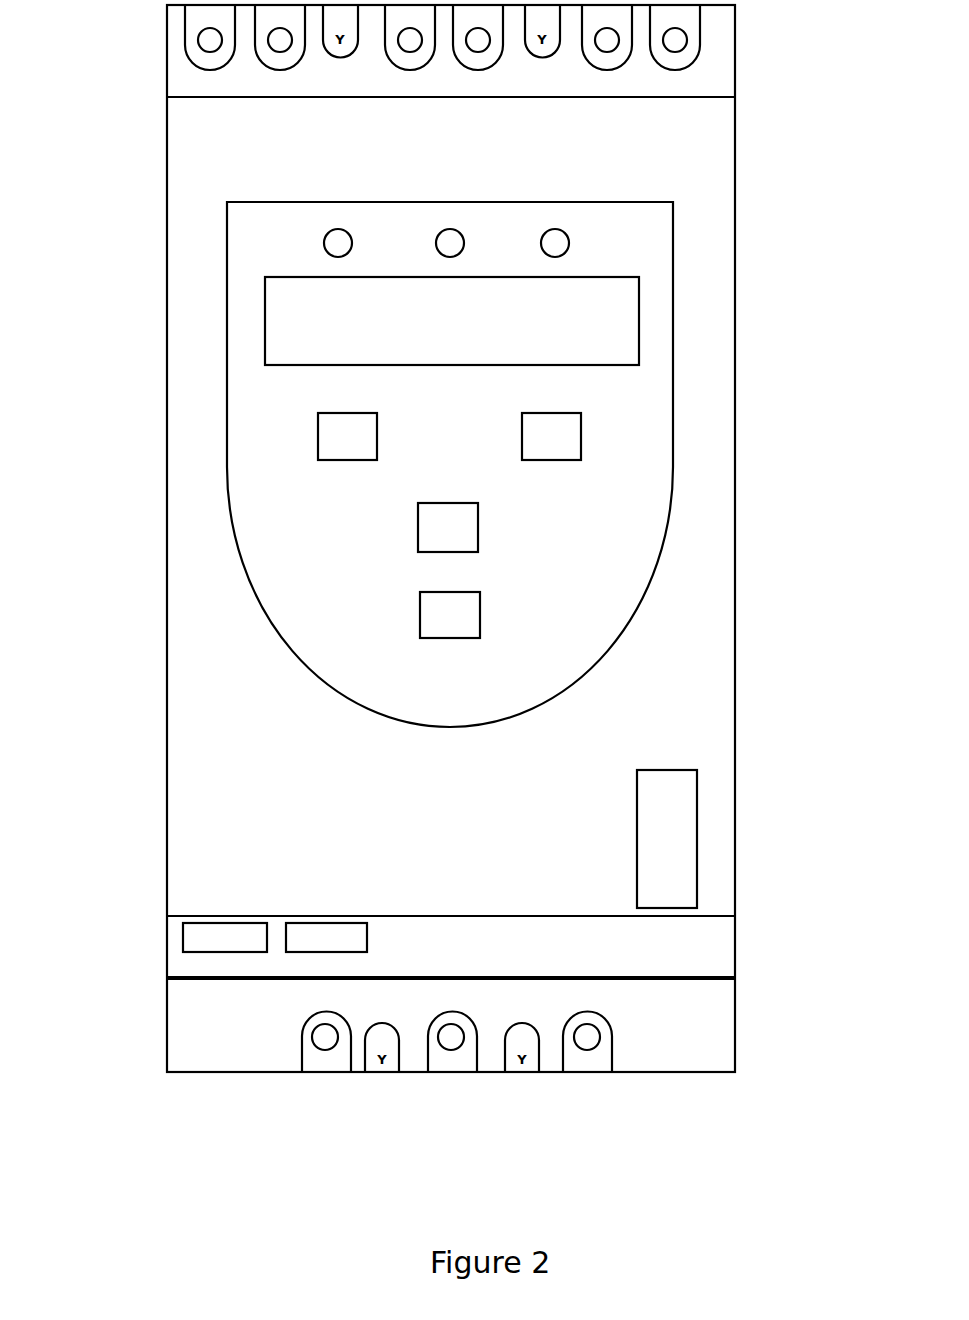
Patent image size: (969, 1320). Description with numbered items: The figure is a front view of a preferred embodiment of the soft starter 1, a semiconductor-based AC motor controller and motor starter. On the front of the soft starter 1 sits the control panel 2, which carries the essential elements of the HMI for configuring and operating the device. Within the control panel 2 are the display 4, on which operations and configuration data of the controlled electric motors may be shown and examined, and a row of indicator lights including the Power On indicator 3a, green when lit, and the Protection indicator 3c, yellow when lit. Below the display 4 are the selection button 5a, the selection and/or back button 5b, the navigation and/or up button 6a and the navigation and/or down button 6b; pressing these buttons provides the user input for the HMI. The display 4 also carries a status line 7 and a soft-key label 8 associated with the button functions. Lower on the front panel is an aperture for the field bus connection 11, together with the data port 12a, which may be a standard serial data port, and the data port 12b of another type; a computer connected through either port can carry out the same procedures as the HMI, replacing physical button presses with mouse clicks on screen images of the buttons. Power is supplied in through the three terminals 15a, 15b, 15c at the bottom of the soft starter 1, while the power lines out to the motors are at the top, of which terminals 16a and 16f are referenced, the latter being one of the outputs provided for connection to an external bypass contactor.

The soft starter 1 is at (187, 202).
The control panel 2 is at (615, 577).
The Power On indicator 3a is at (318, 248).
The Protection indicator 3c is at (582, 254).
The display 4 is at (453, 394).
The selection button 5a is at (338, 438).
The selection and/or back button 5b is at (500, 438).
The navigation and/or up button 6a is at (435, 537).
The navigation and/or down button 6b is at (435, 614).
The display status text line 7 is at (270, 297).
The display soft-key label 8 is at (615, 342).
The field bus connection 11 is at (670, 840).
The data port 12a is at (195, 953).
The data port 12b is at (300, 953).
The power line in terminal 15a is at (318, 1062).
The power line in terminal 15b is at (450, 1062).
The power line in terminal 15c is at (587, 1062).
The power line out terminal 16a is at (197, 25).
The power line out terminal 16f is at (685, 25).